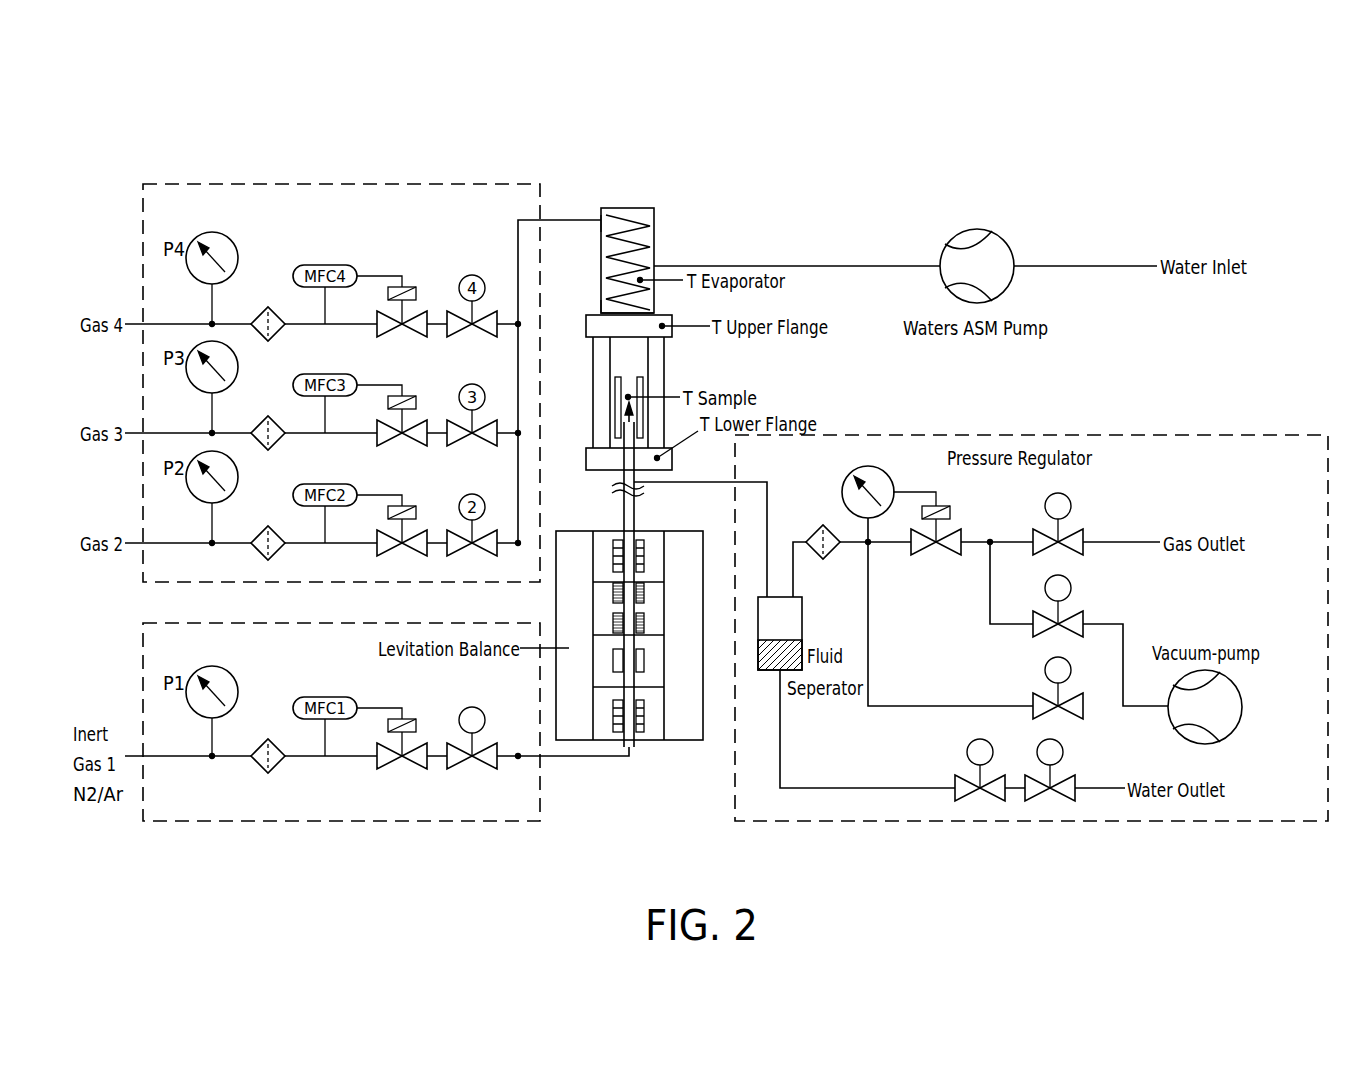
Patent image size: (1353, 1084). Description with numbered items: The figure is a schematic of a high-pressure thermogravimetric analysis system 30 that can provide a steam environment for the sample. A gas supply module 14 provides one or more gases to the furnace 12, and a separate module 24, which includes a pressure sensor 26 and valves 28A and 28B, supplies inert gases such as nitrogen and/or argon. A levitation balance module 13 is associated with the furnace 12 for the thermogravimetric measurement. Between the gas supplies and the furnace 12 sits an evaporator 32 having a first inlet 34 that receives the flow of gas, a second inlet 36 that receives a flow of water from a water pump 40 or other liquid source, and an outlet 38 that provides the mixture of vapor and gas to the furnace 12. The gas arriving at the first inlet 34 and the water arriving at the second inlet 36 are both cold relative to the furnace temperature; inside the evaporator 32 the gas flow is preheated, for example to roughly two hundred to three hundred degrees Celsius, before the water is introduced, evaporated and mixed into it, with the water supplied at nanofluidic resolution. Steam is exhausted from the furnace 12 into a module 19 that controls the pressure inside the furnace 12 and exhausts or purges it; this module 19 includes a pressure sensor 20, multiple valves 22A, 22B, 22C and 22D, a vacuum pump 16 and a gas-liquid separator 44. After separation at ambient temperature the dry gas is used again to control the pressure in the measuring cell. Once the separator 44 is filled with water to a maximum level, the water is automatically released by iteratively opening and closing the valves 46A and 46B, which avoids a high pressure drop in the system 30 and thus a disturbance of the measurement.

The furnace 12 is at (584, 405).
The levitation balance module 13 is at (684, 740).
The gas supply module 14 is at (340, 184).
The vacuum pump 16 is at (1237, 690).
The module 19 is at (1030, 434).
The pressure sensor 20 is at (843, 492).
The valve 22A is at (928, 556).
The valve 22B is at (1083, 550).
The valve 22C is at (1033, 630).
The valve 22D is at (1033, 702).
The module 24 is at (340, 822).
The pressure sensor 26 is at (238, 685).
The valve 28A is at (402, 770).
The valve 28B is at (487, 770).
The HP-TGA system 30 is at (905, 161).
The evaporator 32 is at (616, 216).
The first inlet 34 is at (600, 222).
The second inlet 36 is at (645, 266).
The outlet 38 is at (600, 313).
The water pump 40 is at (977, 229).
The gas-liquid separator 44 is at (802, 615).
The valve 46A is at (952, 780).
The valve 46B is at (1075, 783).